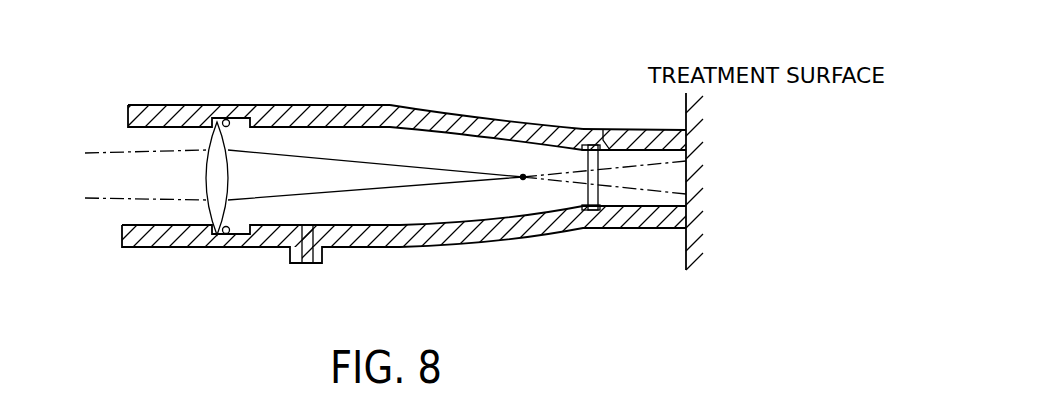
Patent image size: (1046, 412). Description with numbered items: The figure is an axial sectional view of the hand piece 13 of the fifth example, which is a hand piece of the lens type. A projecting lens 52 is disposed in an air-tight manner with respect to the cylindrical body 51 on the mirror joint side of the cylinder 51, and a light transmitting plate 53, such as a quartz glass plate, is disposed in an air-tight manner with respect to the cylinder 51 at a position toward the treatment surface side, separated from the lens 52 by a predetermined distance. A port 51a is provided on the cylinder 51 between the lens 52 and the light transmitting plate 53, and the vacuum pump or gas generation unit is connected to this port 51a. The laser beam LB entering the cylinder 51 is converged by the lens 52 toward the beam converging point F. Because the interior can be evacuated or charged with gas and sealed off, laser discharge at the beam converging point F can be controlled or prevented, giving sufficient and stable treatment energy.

The hand piece 13 is at (418, 105).
The cylindrical body 51 is at (333, 105).
The port 51a is at (325, 258).
The projecting lens 52 is at (209, 146).
The light transmitting plate 53 is at (606, 150).
The beam converging point F is at (522, 165).
The laser beam LB is at (147, 200).